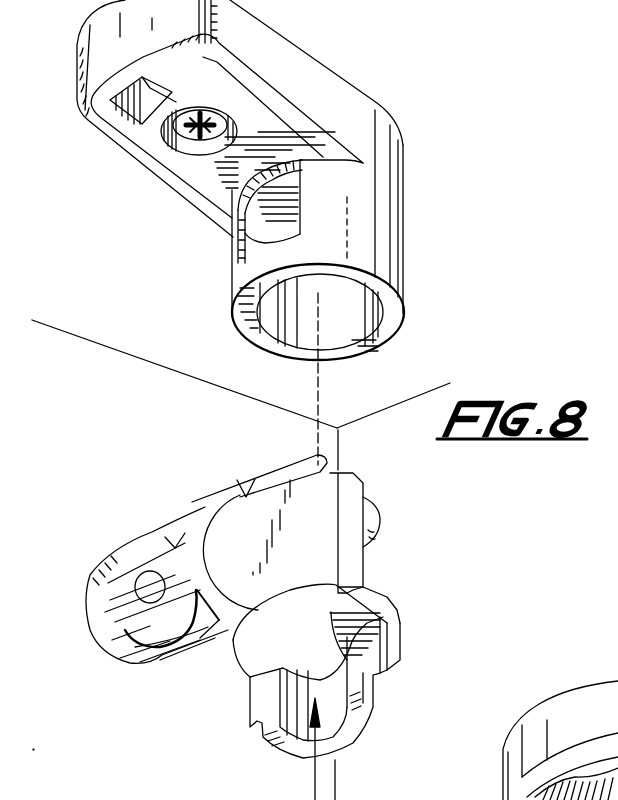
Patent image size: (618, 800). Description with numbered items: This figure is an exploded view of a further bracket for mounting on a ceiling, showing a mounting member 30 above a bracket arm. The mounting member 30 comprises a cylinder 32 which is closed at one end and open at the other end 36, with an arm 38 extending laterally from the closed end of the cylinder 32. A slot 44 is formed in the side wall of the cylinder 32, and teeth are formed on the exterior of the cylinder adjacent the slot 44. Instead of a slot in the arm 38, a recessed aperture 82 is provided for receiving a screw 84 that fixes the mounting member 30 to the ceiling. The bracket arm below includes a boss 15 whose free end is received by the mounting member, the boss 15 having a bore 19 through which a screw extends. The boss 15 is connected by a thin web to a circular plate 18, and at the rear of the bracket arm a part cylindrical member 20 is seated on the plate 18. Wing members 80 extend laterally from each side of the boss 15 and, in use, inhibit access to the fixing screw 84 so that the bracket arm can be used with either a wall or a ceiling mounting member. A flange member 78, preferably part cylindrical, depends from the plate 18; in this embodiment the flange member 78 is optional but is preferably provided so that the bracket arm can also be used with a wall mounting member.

The boss 15 is at (135, 560).
The circular plate 18 is at (310, 692).
The bore 19 is at (140, 594).
The part cylindrical member 20 is at (348, 527).
The mounting member 30 is at (345, 62).
The cylinder 32 is at (383, 248).
The open end 36 is at (288, 325).
The arm 38 is at (77, 73).
The slot 44 is at (268, 237).
The flange member 78 is at (372, 649).
The wing members 80 is at (267, 480).
The recessed aperture 82 is at (203, 150).
The screw 84 is at (172, 152).